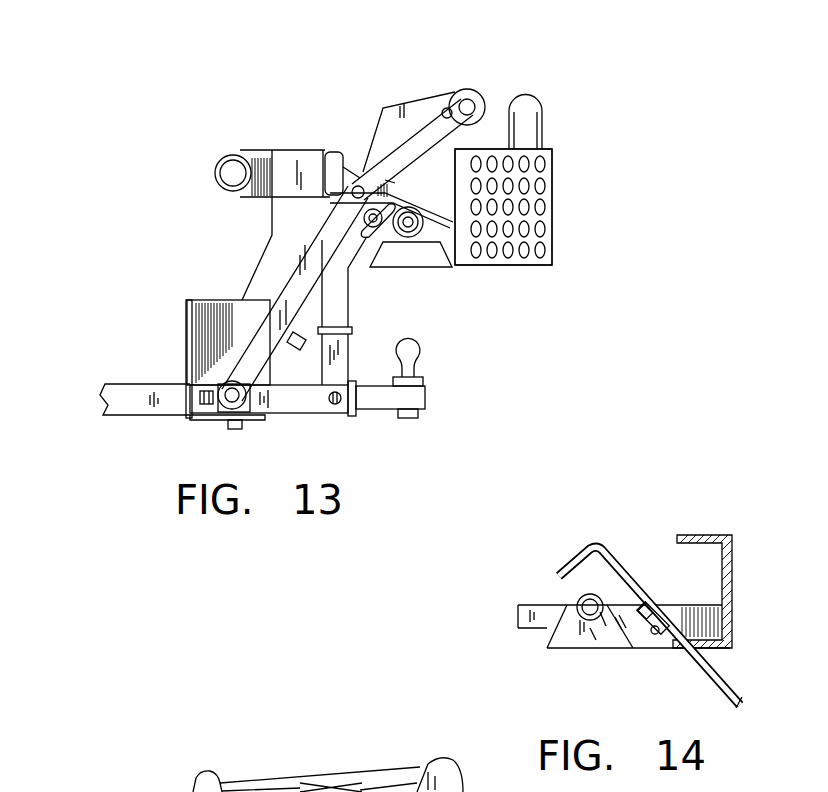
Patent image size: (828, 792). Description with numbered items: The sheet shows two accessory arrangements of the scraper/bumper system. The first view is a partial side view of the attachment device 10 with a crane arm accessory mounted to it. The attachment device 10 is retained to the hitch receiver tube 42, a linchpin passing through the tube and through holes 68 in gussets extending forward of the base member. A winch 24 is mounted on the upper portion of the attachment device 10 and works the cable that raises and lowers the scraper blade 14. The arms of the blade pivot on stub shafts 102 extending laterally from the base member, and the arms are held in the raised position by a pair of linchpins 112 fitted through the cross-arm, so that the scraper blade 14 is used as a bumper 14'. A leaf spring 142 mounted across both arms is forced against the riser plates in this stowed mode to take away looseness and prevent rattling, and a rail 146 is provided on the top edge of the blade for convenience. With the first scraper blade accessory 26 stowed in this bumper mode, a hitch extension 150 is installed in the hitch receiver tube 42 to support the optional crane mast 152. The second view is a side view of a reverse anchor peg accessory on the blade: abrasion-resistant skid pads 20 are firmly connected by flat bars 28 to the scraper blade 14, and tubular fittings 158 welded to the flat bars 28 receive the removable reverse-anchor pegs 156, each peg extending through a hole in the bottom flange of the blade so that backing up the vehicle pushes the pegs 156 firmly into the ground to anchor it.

In FIG. 13, the attachment device 10 is at (276, 87).
In FIG. 13, the winch 24 is at (217, 158).
In FIG. 13, the linchpins 112 is at (372, 212).
In FIG. 13, the crane mast 152 is at (395, 106).
In FIG. 13, the stub shafts 102 is at (223, 383).
In FIG. 13, the hitch receiver tube 42 is at (133, 383).
In FIG. 13, the holes in gussets 68 is at (208, 418).
In FIG. 13, the leaf spring 142 is at (300, 386).
In FIG. 13, the hitch extension 150 is at (336, 413).
In FIG. 13, the first scraper blade accessory 26 is at (597, 108).
In FIG. 13, the rail 146 is at (532, 92).
In FIG. 13, the bumper 14' is at (542, 207).
In FIG. 14, the scraper blade 14 is at (725, 562).
In FIG. 14, the skid pads 20 is at (562, 650).
In FIG. 14, the flat bars 28 is at (657, 648).
In FIG. 14, the reverse-anchor pegs 156 is at (613, 547).
In FIG. 14, the tubular fittings 158 is at (680, 583).